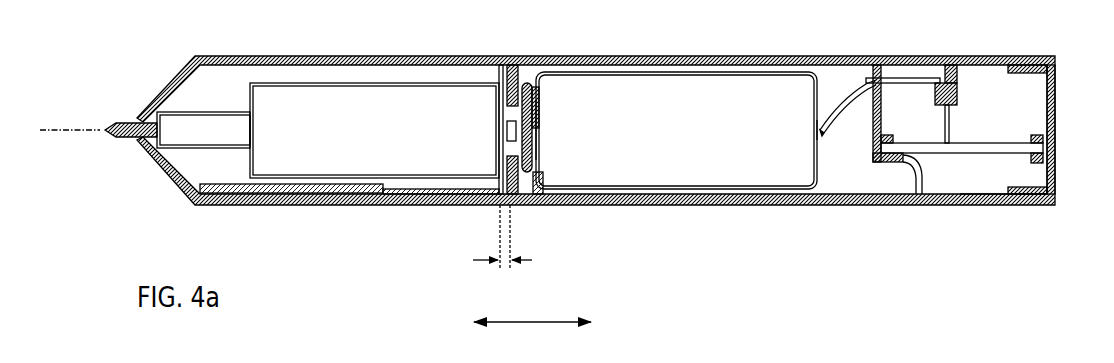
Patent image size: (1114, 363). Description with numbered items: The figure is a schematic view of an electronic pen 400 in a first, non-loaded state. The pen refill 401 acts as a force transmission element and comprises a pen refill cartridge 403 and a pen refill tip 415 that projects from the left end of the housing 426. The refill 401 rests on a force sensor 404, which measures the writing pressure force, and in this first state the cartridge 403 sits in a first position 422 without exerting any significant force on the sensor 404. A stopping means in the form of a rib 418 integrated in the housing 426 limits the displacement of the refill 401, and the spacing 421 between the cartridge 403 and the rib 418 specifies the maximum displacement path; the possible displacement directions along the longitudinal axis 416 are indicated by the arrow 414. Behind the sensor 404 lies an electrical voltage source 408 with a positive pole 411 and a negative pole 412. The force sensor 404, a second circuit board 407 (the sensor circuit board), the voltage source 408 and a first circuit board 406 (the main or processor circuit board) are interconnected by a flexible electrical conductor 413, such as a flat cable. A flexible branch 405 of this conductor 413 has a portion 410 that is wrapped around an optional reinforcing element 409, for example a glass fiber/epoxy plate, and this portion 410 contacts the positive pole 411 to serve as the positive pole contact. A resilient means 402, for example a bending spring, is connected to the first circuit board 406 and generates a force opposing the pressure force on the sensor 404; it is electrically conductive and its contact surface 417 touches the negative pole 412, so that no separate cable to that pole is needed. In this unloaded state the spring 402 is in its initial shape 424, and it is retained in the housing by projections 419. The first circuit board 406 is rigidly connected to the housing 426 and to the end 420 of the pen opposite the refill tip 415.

The electronic pen 400 is at (162, 86).
The pen refill 401 is at (196, 108).
The resilient means 402 is at (914, 76).
The pen refill cartridge 403 is at (357, 141).
The force sensor 404 is at (504, 121).
The flexible branch 405 is at (541, 200).
The first circuit board 406 is at (1021, 138).
The second circuit board 407 is at (349, 209).
The electrical voltage source 408 is at (667, 141).
The reinforcing element 409 is at (526, 80).
The portion of the flexible branch 410 is at (540, 95).
The positive pole 411 is at (540, 140).
The negative pole 412 is at (813, 130).
The flexible electrical conductor 413 is at (931, 191).
The displacement path directions 414 is at (532, 336).
The pen refill tip 415 is at (107, 124).
The longitudinal axis 416 is at (76, 129).
The contact surface 417 is at (826, 134).
The rib 418 is at (504, 79).
The projections 419 is at (954, 64).
The end of the electronic pen 420 is at (1057, 98).
The spacing 421 is at (503, 270).
The first position 422 is at (493, 184).
The initial shape 424 is at (849, 92).
The housing 426 is at (998, 208).